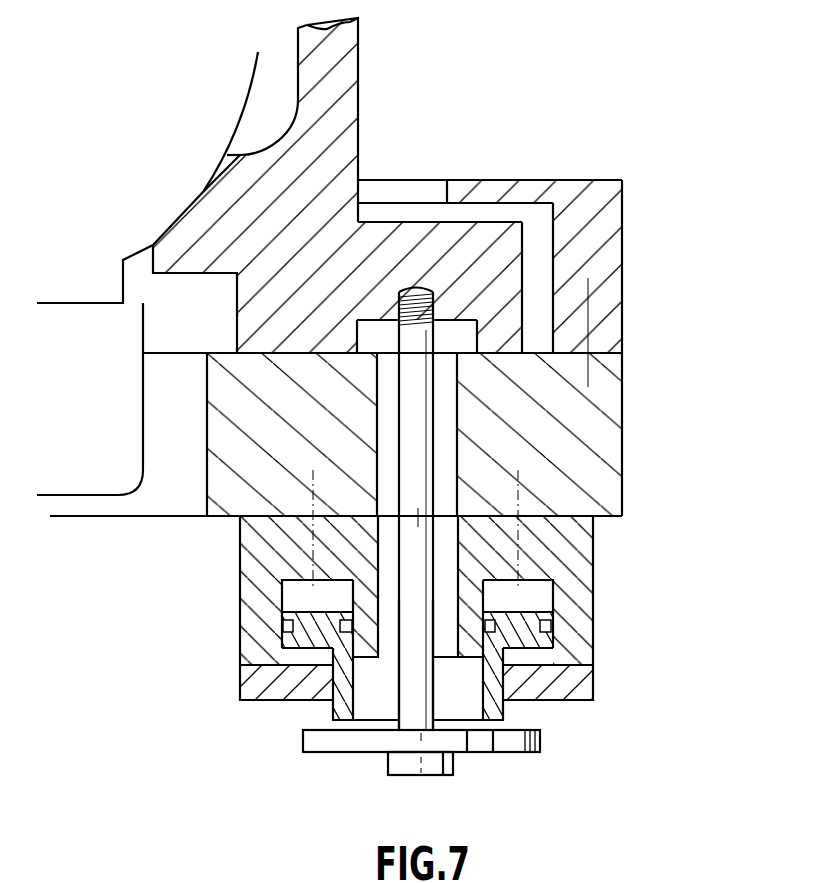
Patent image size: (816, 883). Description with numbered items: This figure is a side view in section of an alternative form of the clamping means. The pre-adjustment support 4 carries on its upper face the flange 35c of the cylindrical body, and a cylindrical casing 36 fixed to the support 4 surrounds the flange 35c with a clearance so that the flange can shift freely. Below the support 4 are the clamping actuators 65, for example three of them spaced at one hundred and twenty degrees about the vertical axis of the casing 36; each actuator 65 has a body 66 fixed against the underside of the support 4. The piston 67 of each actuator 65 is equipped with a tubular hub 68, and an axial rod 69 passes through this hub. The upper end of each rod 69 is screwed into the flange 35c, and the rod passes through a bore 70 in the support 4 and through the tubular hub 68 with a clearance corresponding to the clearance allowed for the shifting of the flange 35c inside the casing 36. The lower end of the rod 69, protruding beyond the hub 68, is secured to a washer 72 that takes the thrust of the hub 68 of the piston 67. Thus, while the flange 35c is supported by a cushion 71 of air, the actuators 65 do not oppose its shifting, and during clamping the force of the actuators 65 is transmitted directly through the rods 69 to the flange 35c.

The flange 35c is at (480, 237).
The cylindrical casing 36 is at (597, 265).
The cushion of air 71 is at (527, 348).
The pre-adjustment support 4 is at (589, 420).
The bore 70 is at (442, 432).
The body 66 is at (263, 537).
The actuator 65 is at (600, 566).
The piston 67 is at (322, 623).
The tubular hub 68 is at (508, 710).
The axial rod 69 is at (412, 682).
The washer 72 is at (500, 752).